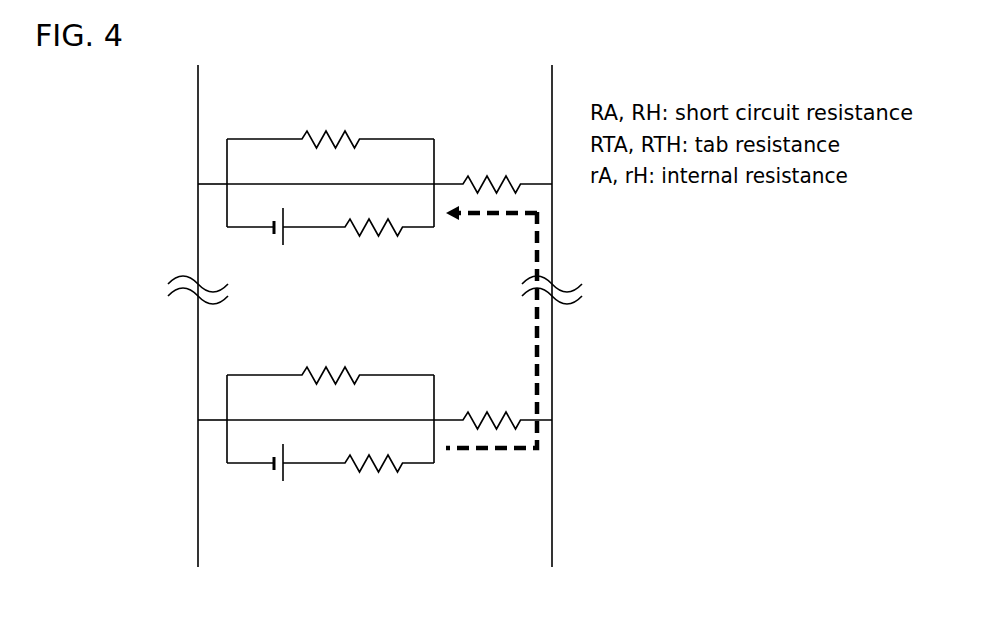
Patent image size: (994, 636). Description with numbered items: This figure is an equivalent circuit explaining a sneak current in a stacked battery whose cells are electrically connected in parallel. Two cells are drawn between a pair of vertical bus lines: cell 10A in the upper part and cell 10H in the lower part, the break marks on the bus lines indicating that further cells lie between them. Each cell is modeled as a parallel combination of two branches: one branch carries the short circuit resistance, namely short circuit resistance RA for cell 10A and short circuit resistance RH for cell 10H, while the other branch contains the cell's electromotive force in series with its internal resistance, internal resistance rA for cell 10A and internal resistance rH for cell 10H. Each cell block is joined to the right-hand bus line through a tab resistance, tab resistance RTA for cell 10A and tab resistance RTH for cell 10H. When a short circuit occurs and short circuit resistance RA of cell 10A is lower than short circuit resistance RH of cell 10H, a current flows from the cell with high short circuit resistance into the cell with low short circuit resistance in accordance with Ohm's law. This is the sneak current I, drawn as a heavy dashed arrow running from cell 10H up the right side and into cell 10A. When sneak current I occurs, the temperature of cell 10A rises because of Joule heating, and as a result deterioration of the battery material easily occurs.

The cell 10A is at (336, 171).
The cell 10H is at (336, 406).
The short circuit resistance RA is at (330, 122).
The short circuit resistance RH is at (330, 358).
The tab resistance RTA is at (493, 166).
The tab resistance RTH is at (493, 403).
The internal resistance rA is at (330, 215).
The internal resistance rH is at (330, 452).
The sneak current I is at (491, 327).